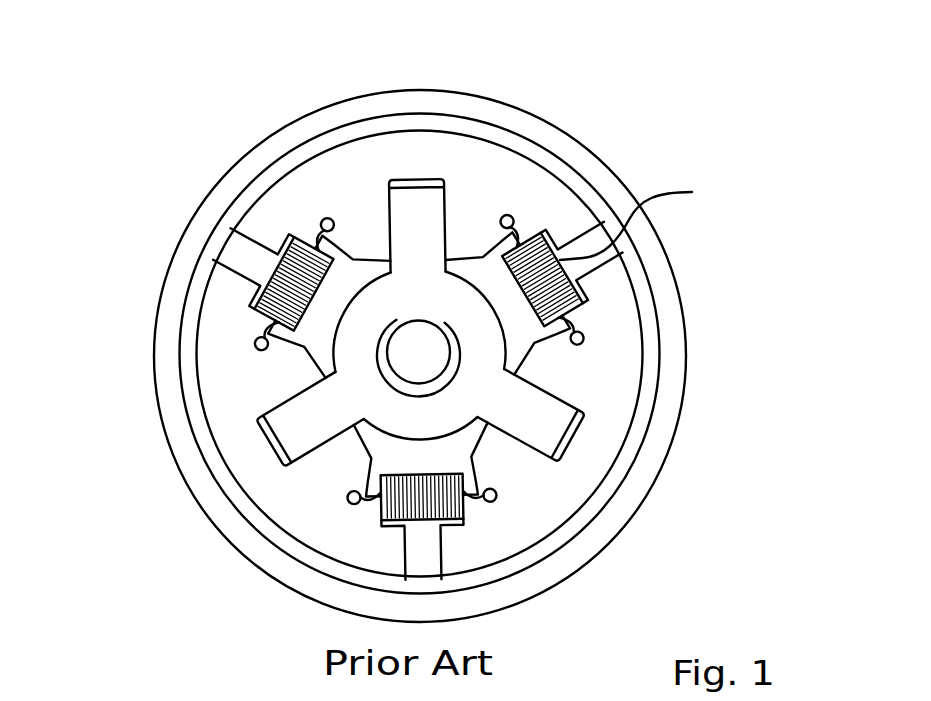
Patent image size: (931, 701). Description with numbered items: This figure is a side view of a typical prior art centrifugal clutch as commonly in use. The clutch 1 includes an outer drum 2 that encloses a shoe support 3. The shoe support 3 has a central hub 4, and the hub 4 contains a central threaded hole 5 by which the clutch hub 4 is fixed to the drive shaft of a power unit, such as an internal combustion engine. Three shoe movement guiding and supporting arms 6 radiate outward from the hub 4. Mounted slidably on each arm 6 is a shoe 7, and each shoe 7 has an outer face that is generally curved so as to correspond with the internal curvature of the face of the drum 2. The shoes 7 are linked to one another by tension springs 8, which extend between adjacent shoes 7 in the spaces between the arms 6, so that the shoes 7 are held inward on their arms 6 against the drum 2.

The clutch 1 is at (631, 129).
The drum 2 is at (643, 498).
The shoe support 3 is at (347, 403).
The hub 4 is at (457, 410).
The central threaded hole 5 is at (432, 353).
The shoe movement guiding and supporting arms 6 is at (423, 222).
The shoe 7 is at (353, 185).
The tension springs 8 is at (637, 220).